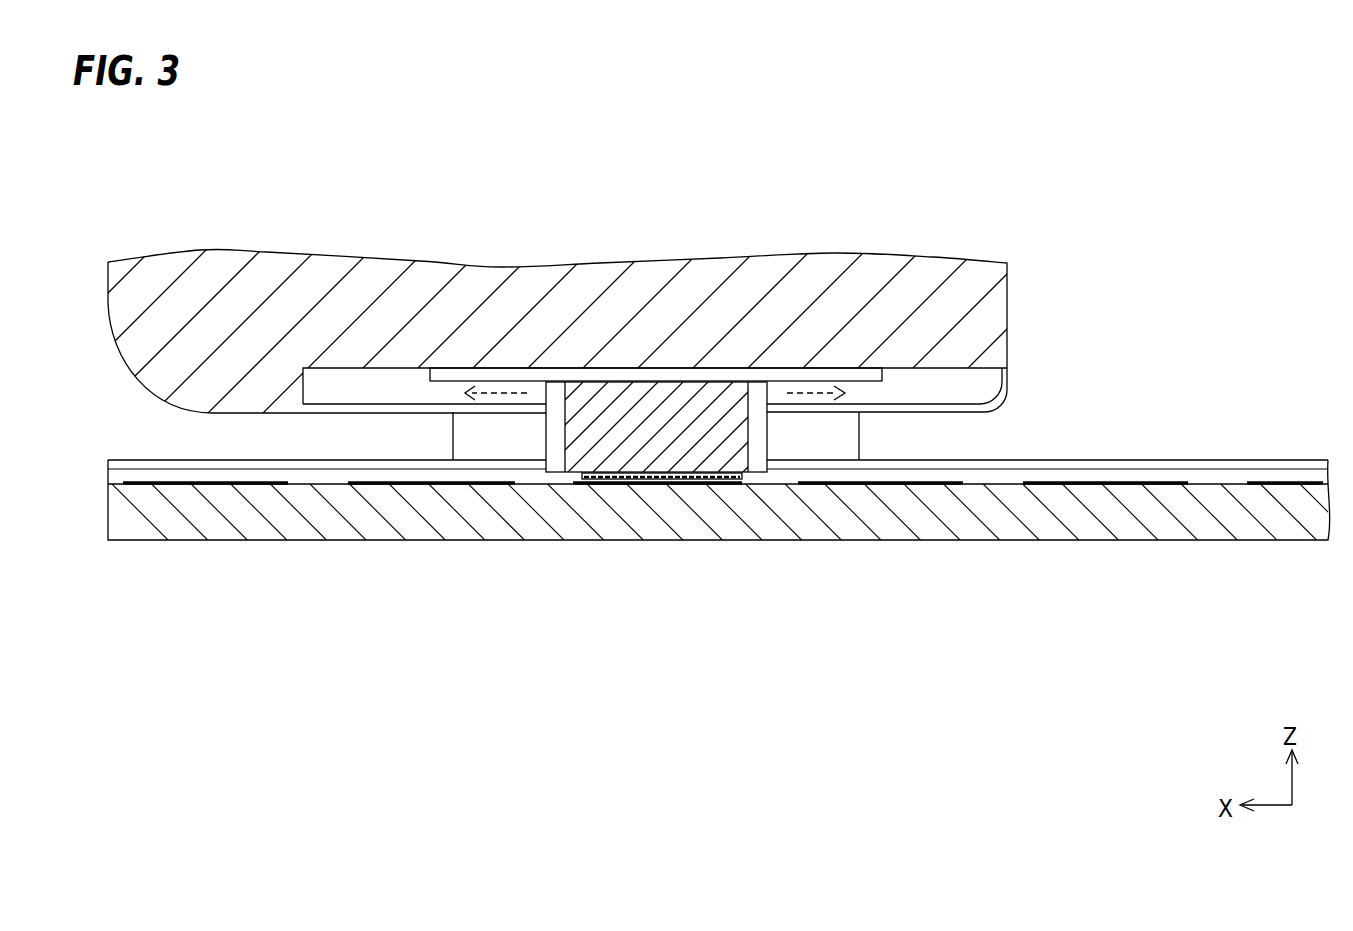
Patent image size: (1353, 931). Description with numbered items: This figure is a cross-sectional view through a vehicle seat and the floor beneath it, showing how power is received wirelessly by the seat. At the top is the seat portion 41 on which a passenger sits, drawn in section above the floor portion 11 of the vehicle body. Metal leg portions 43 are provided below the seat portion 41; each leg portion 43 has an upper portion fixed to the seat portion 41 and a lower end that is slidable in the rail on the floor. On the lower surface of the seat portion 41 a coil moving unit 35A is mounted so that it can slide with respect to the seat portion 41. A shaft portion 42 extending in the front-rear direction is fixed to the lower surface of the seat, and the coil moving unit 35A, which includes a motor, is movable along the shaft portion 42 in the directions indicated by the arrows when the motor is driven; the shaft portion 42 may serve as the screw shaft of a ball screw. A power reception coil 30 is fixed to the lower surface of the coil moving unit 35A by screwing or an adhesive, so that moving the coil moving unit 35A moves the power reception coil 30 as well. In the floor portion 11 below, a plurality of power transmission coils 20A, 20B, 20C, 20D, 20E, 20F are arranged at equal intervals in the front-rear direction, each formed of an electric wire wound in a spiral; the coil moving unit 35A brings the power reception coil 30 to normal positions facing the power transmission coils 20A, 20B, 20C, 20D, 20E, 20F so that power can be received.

The floor portion 11 is at (593, 520).
The power transmission coil 20A is at (210, 484).
The power transmission coil 20B is at (432, 484).
The power transmission coil 20C is at (652, 484).
The power transmission coil 20D is at (873, 484).
The power transmission coil 20E is at (1093, 484).
The power transmission coil 20F is at (1313, 484).
The power reception coil 30 is at (693, 478).
The coil moving unit 35A is at (648, 390).
The seat portion 41 is at (993, 318).
The shaft portion 42 is at (731, 376).
The leg portion 43 is at (842, 438).